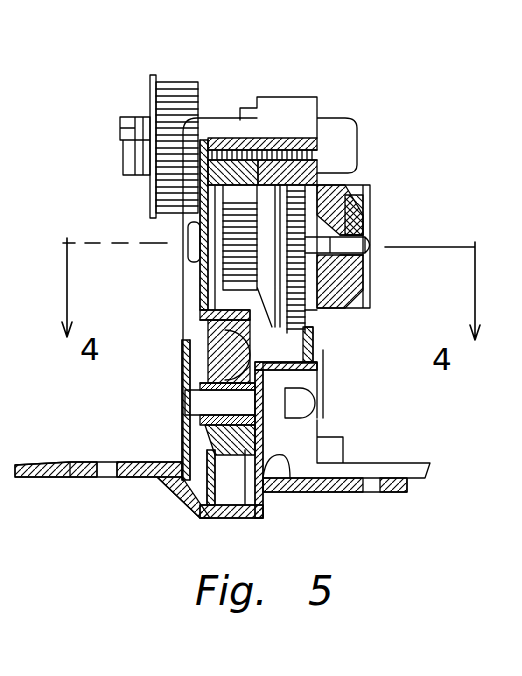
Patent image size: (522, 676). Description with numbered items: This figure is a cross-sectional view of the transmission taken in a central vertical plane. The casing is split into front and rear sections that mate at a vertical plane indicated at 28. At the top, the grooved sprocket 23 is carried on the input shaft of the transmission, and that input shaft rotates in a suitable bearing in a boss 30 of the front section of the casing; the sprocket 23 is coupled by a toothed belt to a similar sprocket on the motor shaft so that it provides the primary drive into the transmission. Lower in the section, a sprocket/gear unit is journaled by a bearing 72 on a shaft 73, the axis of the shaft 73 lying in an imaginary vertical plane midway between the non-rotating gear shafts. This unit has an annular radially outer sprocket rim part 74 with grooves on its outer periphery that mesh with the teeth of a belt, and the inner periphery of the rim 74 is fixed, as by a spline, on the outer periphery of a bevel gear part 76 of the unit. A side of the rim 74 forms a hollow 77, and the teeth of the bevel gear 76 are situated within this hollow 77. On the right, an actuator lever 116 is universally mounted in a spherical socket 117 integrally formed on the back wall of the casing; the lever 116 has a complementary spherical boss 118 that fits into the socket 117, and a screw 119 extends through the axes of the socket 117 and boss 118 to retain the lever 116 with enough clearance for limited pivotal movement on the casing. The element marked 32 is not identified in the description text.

The grooved sprocket 23 is at (188, 80).
The vertical plane 28 is at (243, 110).
The boss 30 is at (218, 117).
The nut 32 is at (134, 188).
The bearing 72 is at (198, 410).
The shaft 73 is at (203, 382).
The sprocket rim part 74 is at (197, 500).
The bevel gear part 76 is at (200, 325).
The hollow 77 is at (293, 470).
The actuator lever 116 is at (372, 203).
The spherical socket 117 is at (372, 275).
The spherical boss 118 is at (372, 225).
The screw 119 is at (372, 248).